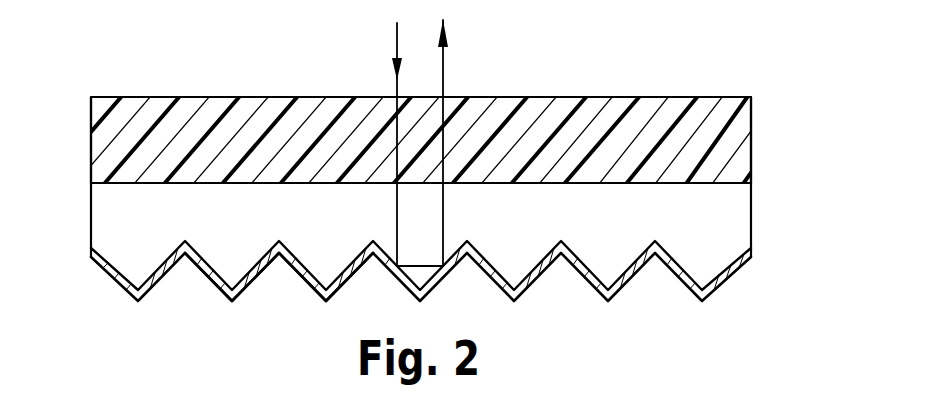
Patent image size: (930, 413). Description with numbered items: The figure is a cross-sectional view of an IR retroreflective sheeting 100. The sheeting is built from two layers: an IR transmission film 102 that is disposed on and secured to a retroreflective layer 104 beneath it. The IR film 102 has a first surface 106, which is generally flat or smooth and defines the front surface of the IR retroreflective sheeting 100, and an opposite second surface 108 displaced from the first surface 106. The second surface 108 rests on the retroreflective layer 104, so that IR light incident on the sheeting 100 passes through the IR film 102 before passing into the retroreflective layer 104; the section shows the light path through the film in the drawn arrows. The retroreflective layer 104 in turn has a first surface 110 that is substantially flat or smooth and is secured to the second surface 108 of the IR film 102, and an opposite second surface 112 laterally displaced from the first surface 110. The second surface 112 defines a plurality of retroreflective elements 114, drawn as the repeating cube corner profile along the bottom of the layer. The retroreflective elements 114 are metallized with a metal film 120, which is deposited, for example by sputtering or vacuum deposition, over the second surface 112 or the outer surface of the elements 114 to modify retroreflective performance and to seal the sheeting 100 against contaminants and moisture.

The IR retroreflective sheeting 100 is at (587, 65).
The IR transmission film 102 is at (751, 121).
The retroreflective layer 104 is at (751, 207).
The first surface 106 is at (144, 97).
The second surface 108 is at (148, 183).
The first surface 110 is at (707, 179).
The second surface 112 is at (110, 268).
The retroreflective elements 114 is at (314, 312).
The metal film 120 is at (722, 285).